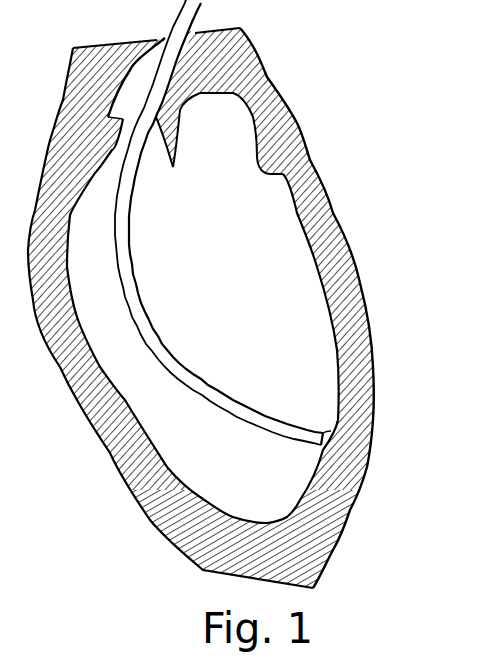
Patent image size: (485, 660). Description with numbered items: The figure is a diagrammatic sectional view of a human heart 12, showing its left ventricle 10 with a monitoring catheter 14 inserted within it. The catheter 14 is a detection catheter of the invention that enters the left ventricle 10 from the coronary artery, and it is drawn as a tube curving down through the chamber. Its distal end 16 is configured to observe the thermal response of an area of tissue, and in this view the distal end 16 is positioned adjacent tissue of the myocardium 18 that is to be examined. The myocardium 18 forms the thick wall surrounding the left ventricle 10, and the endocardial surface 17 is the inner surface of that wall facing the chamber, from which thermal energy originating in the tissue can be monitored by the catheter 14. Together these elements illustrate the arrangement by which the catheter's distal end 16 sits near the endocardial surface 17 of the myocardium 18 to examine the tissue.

The left ventricle 10 is at (303, 294).
The human heart 12 is at (338, 70).
The monitoring catheter 14 is at (131, 272).
The distal end of the catheter 16 is at (327, 433).
The endocardial surface 17 is at (297, 241).
The myocardium 18 is at (333, 500).